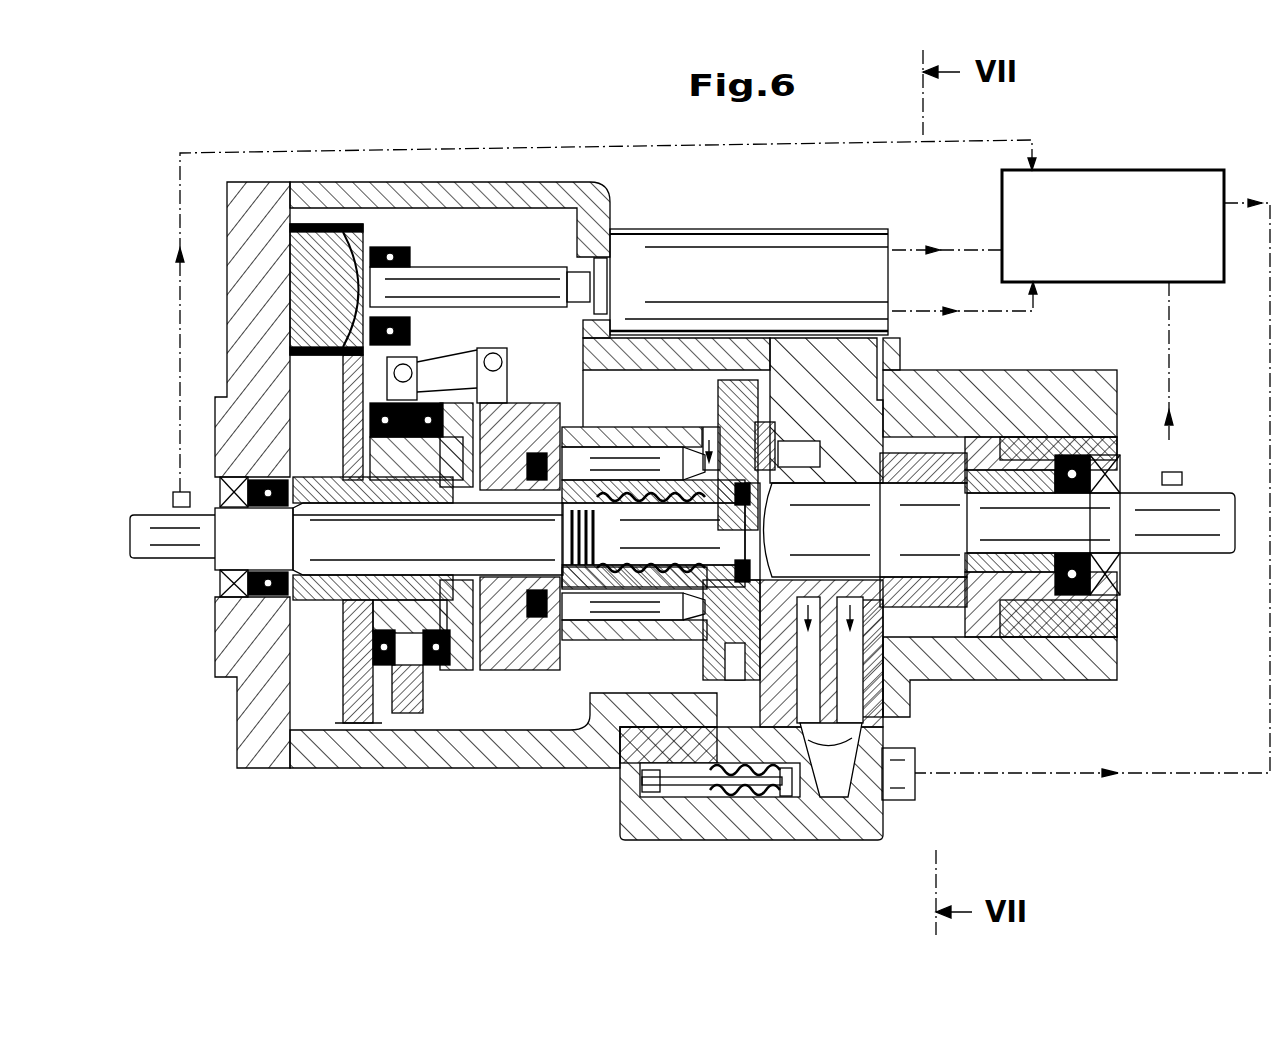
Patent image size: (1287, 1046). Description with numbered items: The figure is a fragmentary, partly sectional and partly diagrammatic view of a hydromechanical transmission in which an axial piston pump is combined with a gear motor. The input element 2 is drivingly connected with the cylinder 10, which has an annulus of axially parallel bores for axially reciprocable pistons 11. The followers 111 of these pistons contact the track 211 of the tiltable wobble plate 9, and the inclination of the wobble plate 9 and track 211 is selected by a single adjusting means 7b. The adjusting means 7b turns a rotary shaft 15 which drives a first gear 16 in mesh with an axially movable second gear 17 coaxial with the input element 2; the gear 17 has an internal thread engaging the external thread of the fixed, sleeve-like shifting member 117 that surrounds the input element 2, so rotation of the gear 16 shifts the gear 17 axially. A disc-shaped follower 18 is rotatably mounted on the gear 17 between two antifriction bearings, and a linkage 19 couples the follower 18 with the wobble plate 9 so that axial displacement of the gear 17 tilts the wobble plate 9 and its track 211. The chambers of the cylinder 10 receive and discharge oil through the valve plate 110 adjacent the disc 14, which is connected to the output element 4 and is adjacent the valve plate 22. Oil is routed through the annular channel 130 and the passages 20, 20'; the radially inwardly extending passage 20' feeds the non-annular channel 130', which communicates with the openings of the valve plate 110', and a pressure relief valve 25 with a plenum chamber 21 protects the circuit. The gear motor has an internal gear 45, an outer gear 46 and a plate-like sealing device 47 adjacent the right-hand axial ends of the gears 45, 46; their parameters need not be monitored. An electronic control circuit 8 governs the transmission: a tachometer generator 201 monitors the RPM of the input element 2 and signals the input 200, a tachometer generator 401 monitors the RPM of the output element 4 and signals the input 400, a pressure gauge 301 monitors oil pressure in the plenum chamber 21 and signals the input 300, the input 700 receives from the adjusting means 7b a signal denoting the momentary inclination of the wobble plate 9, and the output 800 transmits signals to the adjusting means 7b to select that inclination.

The input element 2 is at (190, 542).
The output element 4 is at (1210, 523).
The adjusting means 7b is at (632, 250).
The control circuit 8 is at (1108, 185).
The wobble plate 9 is at (485, 668).
The cylinder 10 is at (628, 600).
The pistons 11 is at (580, 590).
The disc 14 is at (741, 352).
The rotary shaft 15 is at (427, 280).
The first gear 16 is at (316, 225).
The second gear 17 is at (347, 680).
The follower 18 is at (402, 713).
The linkage 19 is at (455, 358).
The passage 20 is at (830, 752).
The radially inwardly extending passage 20' is at (923, 741).
The plenum chamber 21 is at (853, 810).
The valve plate 22 is at (765, 425).
The relief valve 25 is at (785, 790).
The internal gear 45 is at (1117, 612).
The outer gear 46 is at (1013, 682).
The sealing device 47 is at (1113, 647).
The valve plate 110 is at (642, 641).
The valve plate 110' is at (1026, 750).
The followers 111 is at (540, 620).
The shifting member 117 is at (282, 598).
The annular channel 130 is at (823, 320).
The non-annular channel 130' is at (979, 712).
The input 200 is at (557, 298).
The tachometer generator 201 is at (170, 496).
The track 211 is at (517, 668).
The input 300 is at (1167, 775).
The pressure gauge 301 is at (915, 800).
The input 400 is at (1161, 383).
The tachometer generator 401 is at (1178, 471).
The input 700 is at (930, 248).
The output 800 is at (982, 312).